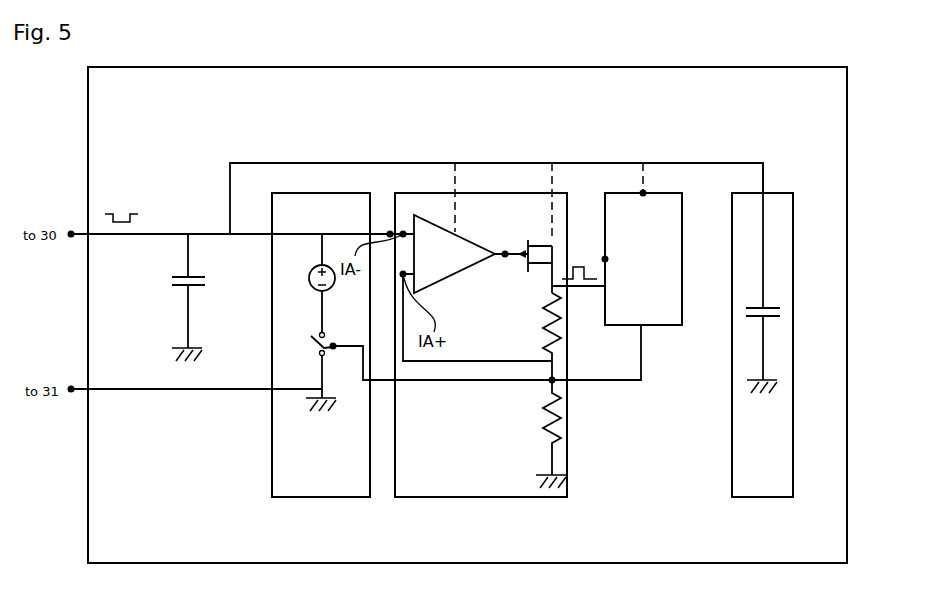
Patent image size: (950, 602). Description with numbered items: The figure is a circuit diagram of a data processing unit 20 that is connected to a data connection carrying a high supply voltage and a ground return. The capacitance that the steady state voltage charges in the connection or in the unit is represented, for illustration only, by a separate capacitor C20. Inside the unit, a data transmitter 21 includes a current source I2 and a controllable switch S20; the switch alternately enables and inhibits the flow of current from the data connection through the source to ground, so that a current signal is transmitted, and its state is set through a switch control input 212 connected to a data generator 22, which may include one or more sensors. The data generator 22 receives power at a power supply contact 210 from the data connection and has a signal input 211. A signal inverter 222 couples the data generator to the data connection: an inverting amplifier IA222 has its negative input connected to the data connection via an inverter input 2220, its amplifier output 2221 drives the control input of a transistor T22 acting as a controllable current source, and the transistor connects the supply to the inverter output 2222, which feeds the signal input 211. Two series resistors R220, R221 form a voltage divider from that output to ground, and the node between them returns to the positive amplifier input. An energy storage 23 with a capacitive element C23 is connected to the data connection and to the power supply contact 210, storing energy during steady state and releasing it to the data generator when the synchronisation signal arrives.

The data processing unit 20 is at (467, 315).
The data transmitter 21 is at (321, 345).
The data generator 22 is at (642, 259).
The energy storage 23 is at (762, 345).
The signal inverter 222 is at (481, 330).
The power supply contact 210 is at (643, 193).
The signal input 211 is at (605, 286).
The switch control input 212 is at (333, 346).
The inverter input 2220 is at (390, 234).
The amplifier output node 2221 is at (505, 254).
The signal inverter output 2222 is at (560, 289).
The capacitor C20 is at (175, 281).
The capacitive element C23 is at (763, 306).
The current source I2 is at (308, 280).
The controllable switch S20 is at (317, 343).
The resistor R220 is at (550, 337).
The resistor R221 is at (560, 425).
The transistor T22 is at (552, 246).
The inverting amplifier IA222 is at (476, 288).